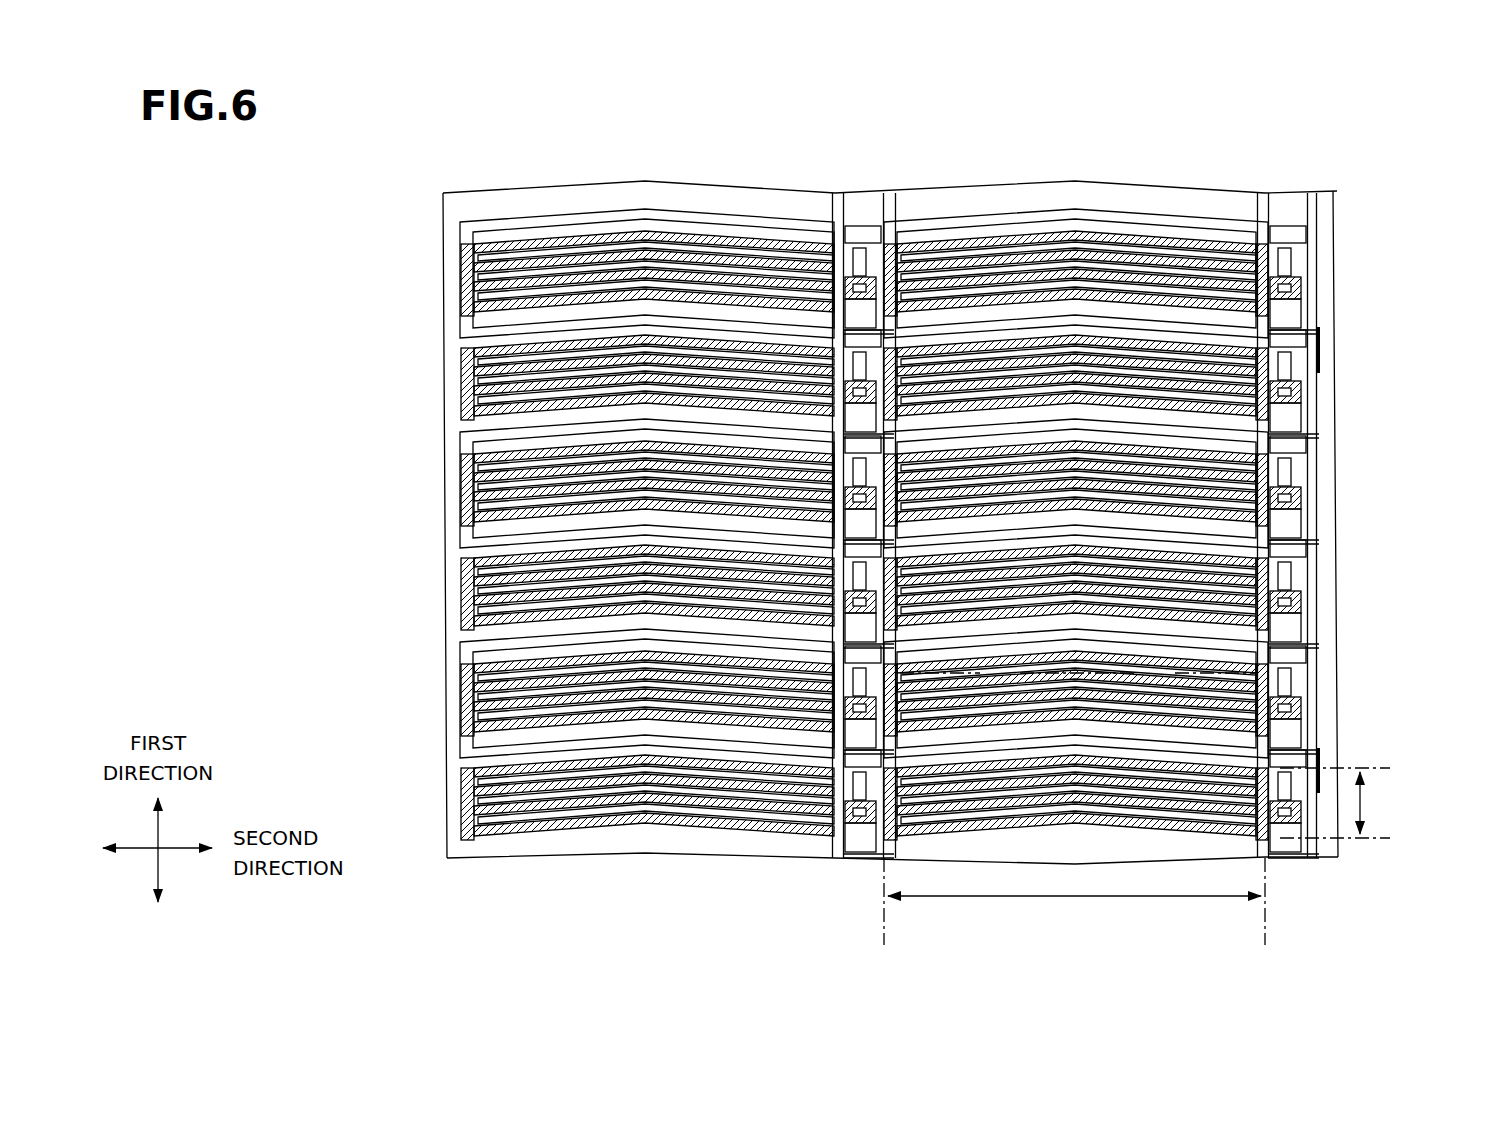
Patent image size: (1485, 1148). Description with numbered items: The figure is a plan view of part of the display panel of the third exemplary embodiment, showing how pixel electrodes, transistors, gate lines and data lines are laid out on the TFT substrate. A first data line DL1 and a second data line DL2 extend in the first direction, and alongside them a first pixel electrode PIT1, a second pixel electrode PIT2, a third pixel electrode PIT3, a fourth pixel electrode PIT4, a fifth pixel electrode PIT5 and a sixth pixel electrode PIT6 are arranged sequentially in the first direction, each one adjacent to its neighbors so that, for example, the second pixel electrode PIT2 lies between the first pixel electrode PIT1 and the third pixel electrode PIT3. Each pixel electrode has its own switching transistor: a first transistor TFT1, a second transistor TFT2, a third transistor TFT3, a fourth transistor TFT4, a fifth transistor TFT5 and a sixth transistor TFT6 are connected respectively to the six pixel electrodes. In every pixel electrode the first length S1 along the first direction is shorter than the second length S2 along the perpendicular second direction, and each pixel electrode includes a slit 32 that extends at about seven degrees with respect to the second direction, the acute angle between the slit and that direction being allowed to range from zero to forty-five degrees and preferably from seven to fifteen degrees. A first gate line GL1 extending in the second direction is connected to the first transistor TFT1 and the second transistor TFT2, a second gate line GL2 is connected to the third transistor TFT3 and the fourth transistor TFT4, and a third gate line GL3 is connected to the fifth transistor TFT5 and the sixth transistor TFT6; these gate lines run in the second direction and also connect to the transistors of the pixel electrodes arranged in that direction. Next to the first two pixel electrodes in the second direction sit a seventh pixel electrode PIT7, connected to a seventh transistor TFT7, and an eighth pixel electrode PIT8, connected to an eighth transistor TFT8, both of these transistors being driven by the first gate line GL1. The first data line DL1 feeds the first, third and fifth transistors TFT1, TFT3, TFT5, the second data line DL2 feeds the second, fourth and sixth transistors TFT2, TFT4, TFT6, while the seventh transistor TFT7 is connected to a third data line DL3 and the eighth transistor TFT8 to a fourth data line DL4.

The first pixel electrode PIT1 is at (568, 237).
The second pixel electrode PIT2 is at (461, 380).
The third pixel electrode PIT3 is at (461, 470).
The fourth pixel electrode PIT4 is at (461, 598).
The fifth pixel electrode PIT5 is at (461, 690).
The sixth pixel electrode PIT6 is at (461, 792).
The seventh pixel electrode PIT7 is at (1138, 237).
The eighth pixel electrode PIT8 is at (1015, 340).
The first transistor TFT1 is at (862, 224).
The second transistor TFT2 is at (830, 366).
The third transistor TFT3 is at (830, 465).
The fourth transistor TFT4 is at (830, 576).
The fifth transistor TFT5 is at (830, 682).
The sixth transistor TFT6 is at (830, 786).
The seventh transistor TFT7 is at (1320, 236).
The eighth transistor TFT8 is at (1320, 346).
The first data line DL1 is at (835, 192).
The second data line DL2 is at (887, 192).
The third data line DL3 is at (1262, 192).
The fourth data line DL4 is at (1318, 192).
The first gate line GL1 is at (460, 237).
The second gate line GL2 is at (460, 540).
The third gate line GL3 is at (460, 748).
The slit 32 is at (1200, 612).
The first length S1 is at (1341, 803).
The second length S2 is at (1074, 901).